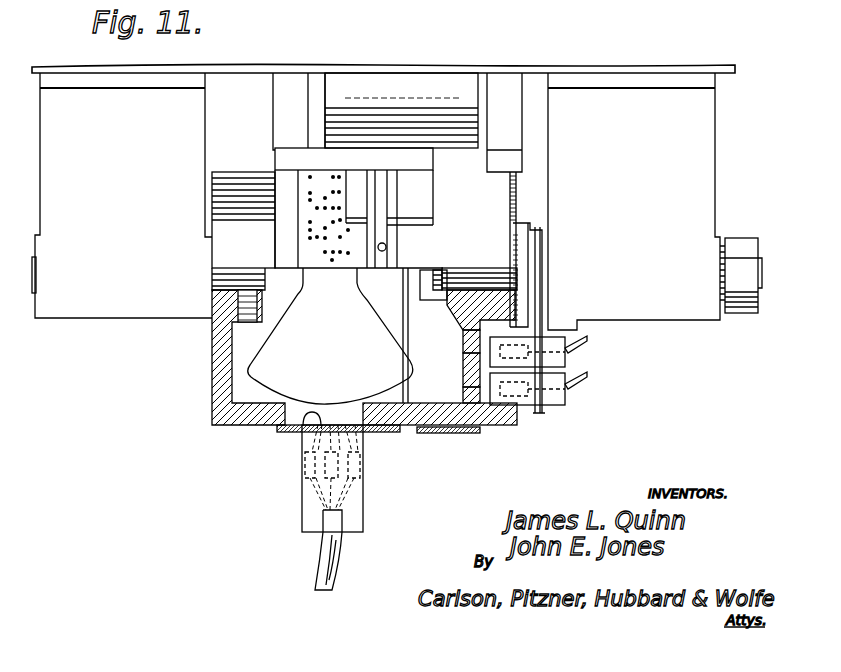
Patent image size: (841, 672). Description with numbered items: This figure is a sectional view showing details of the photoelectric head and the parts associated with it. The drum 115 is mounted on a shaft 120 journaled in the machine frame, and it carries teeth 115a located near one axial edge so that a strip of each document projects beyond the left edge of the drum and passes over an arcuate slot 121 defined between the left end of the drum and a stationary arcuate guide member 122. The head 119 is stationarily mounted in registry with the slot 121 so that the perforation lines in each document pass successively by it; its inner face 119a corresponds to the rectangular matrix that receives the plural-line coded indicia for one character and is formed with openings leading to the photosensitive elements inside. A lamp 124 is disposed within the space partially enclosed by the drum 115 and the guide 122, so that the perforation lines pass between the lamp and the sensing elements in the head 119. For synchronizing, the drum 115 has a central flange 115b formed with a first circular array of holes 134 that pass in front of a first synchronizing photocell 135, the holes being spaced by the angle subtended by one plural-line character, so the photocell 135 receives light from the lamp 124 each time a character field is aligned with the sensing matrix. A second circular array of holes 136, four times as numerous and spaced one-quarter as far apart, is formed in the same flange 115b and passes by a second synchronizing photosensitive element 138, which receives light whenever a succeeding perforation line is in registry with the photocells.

The drum 115 is at (473, 406).
The teeth 115a is at (385, 428).
The central flange 115b is at (463, 370).
The head 119 is at (294, 524).
The inner face 119a is at (304, 430).
The shaft 120 is at (480, 280).
The arcuate slot 121 is at (357, 406).
The arcuate guide member 122 is at (212, 404).
The lamp 124 is at (338, 337).
The holes 134 is at (463, 350).
The first synchronizing photocell 135 is at (566, 352).
The holes 136 is at (463, 396).
The second synchronizing photosensitive element 138 is at (566, 387).